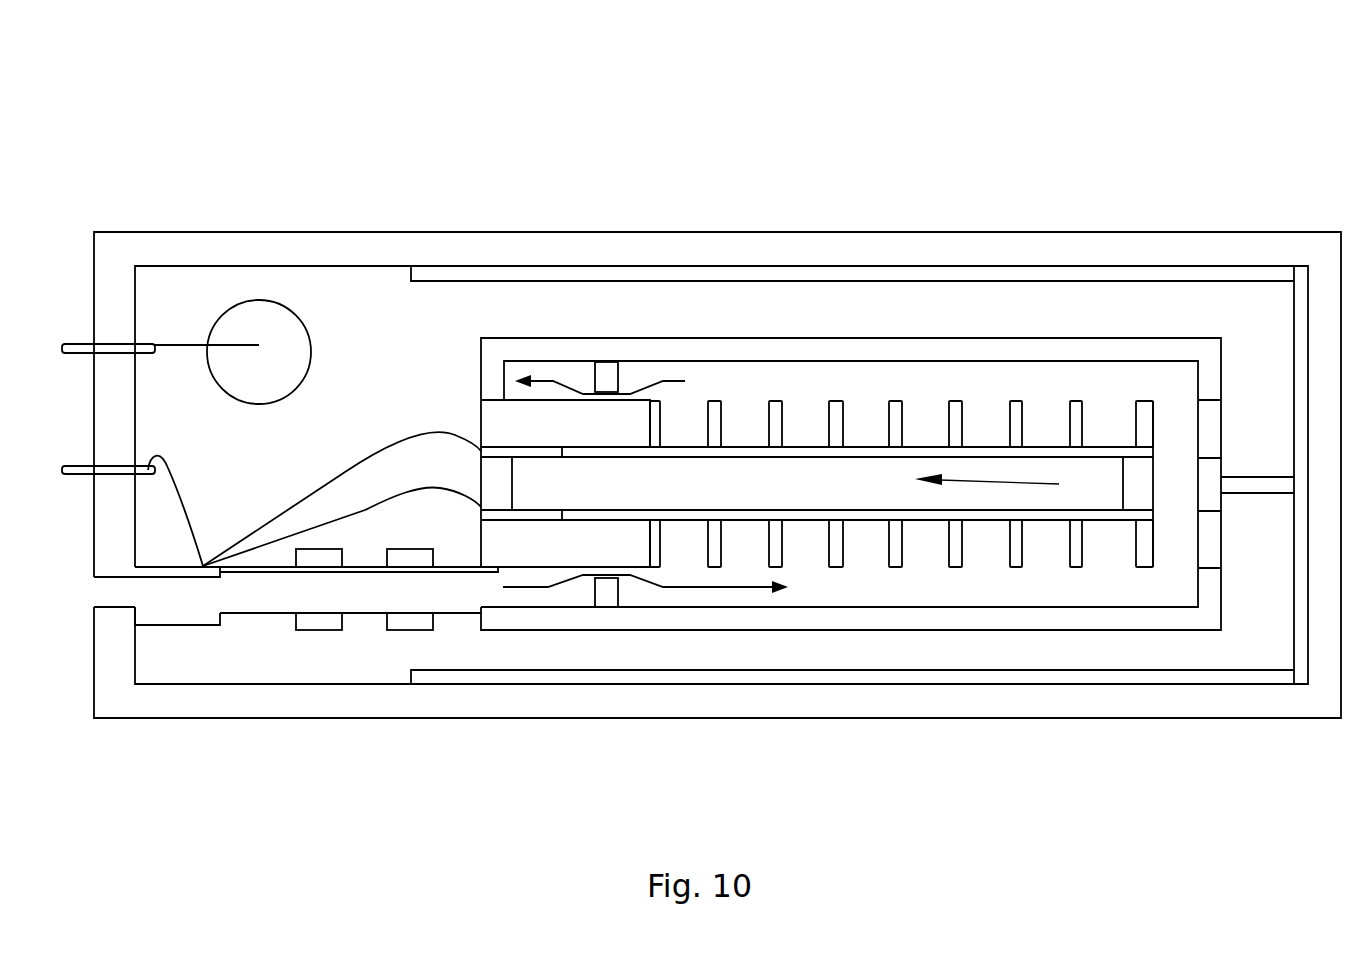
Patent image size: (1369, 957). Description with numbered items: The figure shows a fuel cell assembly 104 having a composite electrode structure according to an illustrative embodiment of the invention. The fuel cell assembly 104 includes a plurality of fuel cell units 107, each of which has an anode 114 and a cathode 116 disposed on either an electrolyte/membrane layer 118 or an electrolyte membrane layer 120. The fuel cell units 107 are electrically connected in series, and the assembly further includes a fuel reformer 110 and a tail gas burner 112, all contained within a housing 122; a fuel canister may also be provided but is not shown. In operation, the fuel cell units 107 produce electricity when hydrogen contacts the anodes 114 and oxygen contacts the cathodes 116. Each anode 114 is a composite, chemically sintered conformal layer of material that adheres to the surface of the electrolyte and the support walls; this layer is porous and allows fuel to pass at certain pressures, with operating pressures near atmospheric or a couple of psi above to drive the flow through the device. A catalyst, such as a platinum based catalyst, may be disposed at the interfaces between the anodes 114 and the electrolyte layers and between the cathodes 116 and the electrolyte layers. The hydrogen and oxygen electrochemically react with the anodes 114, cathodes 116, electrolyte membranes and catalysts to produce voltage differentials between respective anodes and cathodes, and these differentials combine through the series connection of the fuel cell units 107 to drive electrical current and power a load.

The fuel cell assembly 104 is at (1182, 96).
The fuel cell unit 107 is at (741, 447).
The fuel reformer 110 is at (580, 593).
The tail gas burner 112 is at (578, 375).
The anode 114 is at (987, 447).
The cathode 116 is at (697, 458).
The electrolyte/membrane layer 118 is at (1050, 447).
The electrolyte membrane layer 120 is at (870, 510).
The housing 122 is at (1083, 631).